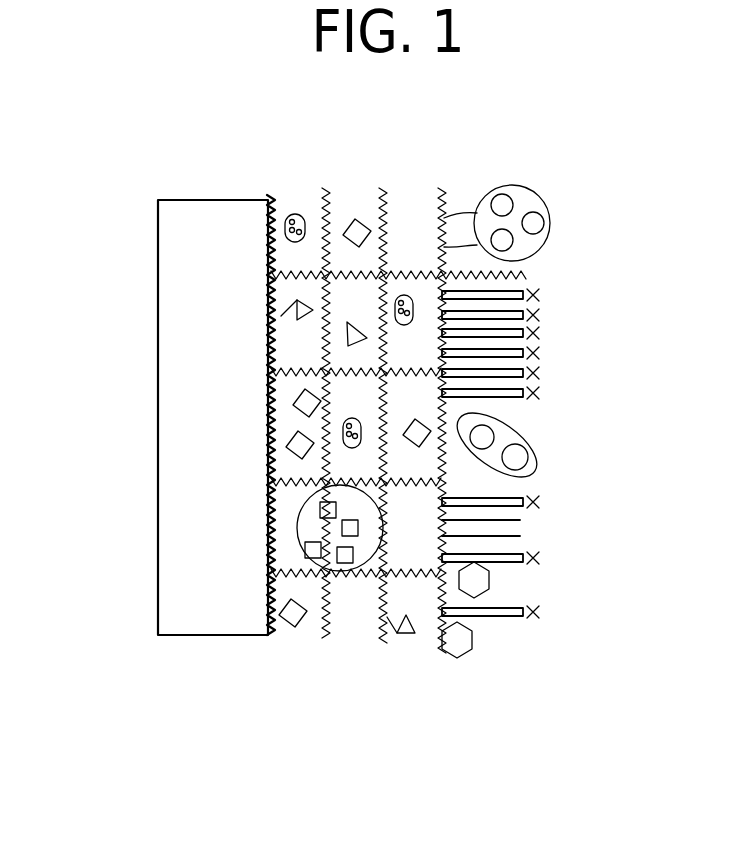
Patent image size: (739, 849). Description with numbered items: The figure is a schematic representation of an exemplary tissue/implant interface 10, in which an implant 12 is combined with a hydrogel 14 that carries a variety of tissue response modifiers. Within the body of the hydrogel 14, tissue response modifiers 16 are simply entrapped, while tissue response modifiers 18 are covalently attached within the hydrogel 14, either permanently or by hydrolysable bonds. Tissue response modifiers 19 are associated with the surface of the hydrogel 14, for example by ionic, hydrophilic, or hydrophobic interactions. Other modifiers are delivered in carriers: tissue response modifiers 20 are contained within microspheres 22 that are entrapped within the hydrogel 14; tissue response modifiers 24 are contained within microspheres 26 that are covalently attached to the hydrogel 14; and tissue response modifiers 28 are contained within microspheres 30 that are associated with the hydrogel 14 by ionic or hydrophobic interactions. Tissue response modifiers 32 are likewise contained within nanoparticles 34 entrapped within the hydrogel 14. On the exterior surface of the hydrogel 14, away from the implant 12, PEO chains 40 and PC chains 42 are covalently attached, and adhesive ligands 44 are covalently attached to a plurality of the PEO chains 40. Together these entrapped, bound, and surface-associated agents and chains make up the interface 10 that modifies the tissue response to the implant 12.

The tissue/implant interface 10 is at (104, 489).
The implant 12 is at (213, 637).
The hydrogel 14 is at (285, 653).
The tissue response modifiers 16 is at (364, 221).
The tissue response modifiers 18 is at (281, 316).
The tissue response modifiers 19 is at (491, 582).
The tissue response modifiers 20 is at (320, 506).
The microspheres 22 is at (305, 548).
The tissue response modifiers 24 is at (548, 225).
The microspheres 26 is at (518, 185).
The tissue response modifiers 28 is at (484, 434).
The microspheres 30 is at (515, 466).
The tissue response modifiers 32 is at (290, 213).
The nanoparticles 34 is at (300, 213).
The PEO chains 40 is at (513, 562).
The PC chains 42 is at (520, 520).
The adhesive ligands 44 is at (540, 293).